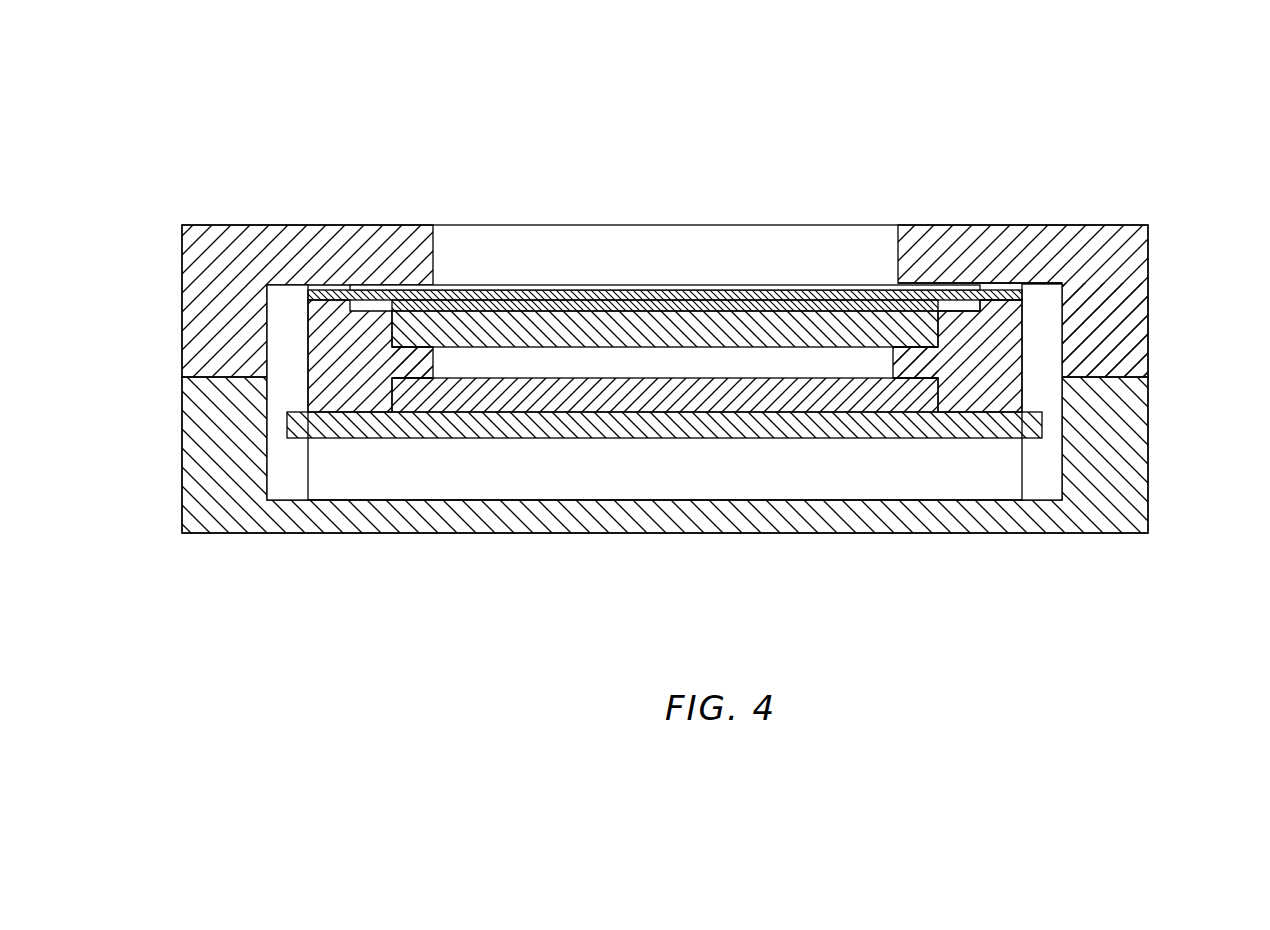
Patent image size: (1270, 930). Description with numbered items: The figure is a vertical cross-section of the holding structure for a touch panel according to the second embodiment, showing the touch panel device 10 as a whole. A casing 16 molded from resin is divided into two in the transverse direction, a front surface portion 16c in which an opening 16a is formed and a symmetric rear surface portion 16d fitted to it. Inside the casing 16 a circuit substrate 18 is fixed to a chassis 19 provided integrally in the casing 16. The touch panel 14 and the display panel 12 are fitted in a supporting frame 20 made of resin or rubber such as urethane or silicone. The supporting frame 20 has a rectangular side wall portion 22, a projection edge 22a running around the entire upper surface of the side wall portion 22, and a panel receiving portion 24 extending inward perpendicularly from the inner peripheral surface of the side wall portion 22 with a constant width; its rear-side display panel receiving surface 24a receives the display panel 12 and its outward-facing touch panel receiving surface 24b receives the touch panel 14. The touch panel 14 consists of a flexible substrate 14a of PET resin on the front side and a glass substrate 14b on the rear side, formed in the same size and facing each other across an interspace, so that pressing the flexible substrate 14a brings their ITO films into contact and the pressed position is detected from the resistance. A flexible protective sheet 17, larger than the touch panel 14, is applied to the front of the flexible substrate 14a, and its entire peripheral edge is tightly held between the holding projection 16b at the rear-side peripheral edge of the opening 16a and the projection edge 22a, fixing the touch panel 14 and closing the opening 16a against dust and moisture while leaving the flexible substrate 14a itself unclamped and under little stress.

The touch panel device 10 is at (860, 102).
The display panel 12 is at (688, 395).
The touch panel 14 is at (772, 280).
The flexible substrate 14a is at (607, 302).
The glass substrate 14b is at (718, 325).
The casing 16 is at (1168, 277).
The opening 16a is at (897, 250).
The holding projection 16b is at (1002, 290).
The front surface portion 16c is at (1100, 247).
The rear surface portion 16d is at (1108, 512).
The protective sheet 17 is at (542, 292).
The circuit substrate 18 is at (845, 427).
The chassis 19 is at (754, 485).
The supporting frame 20 is at (1022, 355).
The side wall portion 22 is at (987, 367).
The projection edge 22a is at (995, 302).
The panel receiving portion 24 is at (915, 368).
The display panel receiving surface 24a is at (422, 375).
The touch panel receiving surface 24b is at (417, 350).